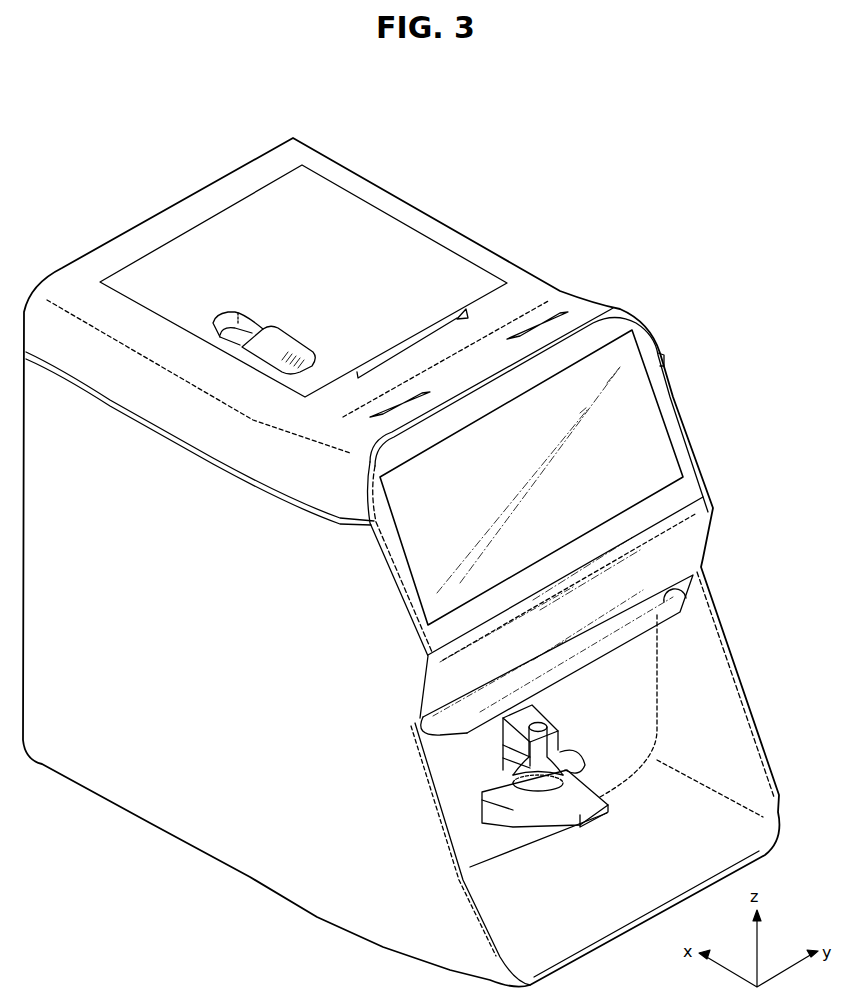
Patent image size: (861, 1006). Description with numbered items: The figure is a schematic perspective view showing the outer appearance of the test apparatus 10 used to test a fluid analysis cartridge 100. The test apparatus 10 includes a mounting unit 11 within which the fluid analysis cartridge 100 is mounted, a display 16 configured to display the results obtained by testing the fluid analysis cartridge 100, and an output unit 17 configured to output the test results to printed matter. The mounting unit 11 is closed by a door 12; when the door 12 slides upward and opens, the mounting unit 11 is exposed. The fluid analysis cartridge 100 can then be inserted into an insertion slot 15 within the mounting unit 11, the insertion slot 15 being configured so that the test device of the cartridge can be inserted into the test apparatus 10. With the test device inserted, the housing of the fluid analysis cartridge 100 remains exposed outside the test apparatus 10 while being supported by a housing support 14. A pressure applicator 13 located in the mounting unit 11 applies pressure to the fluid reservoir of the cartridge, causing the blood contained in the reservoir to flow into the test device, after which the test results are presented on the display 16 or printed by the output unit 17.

The test apparatus 10 is at (218, 83).
The mounting unit 11 is at (722, 708).
The door 12 is at (682, 600).
The pressure applicator 13 is at (560, 750).
The housing support 14 is at (513, 812).
The insertion slot 15 is at (500, 780).
The display 16 is at (640, 423).
The output unit 17 is at (462, 313).
The fluid analysis cartridge 100 is at (583, 788).